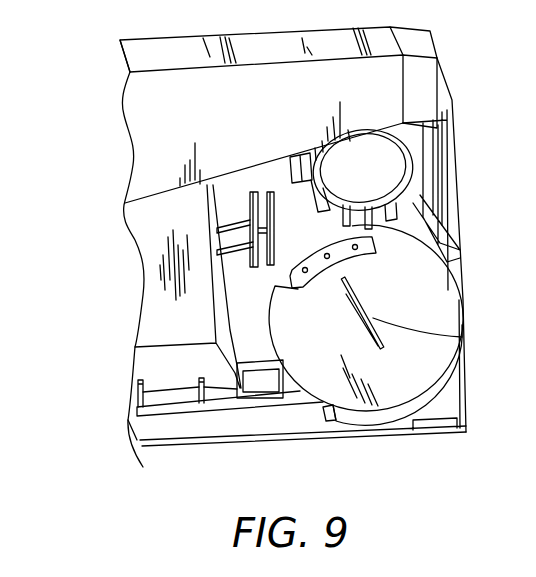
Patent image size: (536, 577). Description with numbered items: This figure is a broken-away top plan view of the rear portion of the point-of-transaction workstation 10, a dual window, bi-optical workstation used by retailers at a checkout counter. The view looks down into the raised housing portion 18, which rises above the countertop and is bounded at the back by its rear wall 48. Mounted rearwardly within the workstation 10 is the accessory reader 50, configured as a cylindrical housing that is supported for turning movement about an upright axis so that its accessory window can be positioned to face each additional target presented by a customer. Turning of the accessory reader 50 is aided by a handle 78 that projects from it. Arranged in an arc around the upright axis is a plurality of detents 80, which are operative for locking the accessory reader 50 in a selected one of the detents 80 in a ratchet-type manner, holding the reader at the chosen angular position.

The point-of-transaction workstation 10 is at (474, 56).
The raised housing portion 18 is at (453, 151).
The rear wall 48 is at (227, 425).
The accessory reader 50 is at (398, 392).
The handle 78 is at (462, 337).
The detents 80 is at (353, 243).